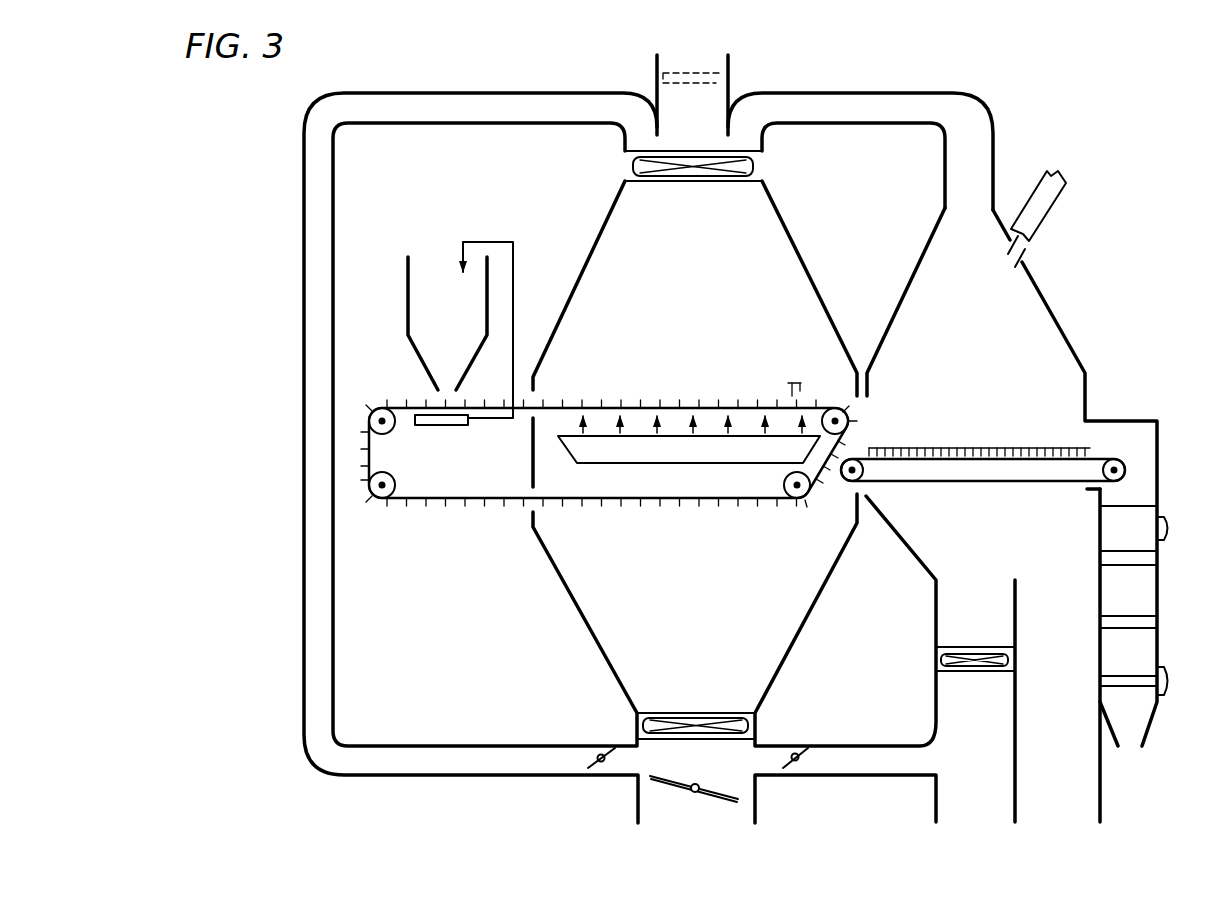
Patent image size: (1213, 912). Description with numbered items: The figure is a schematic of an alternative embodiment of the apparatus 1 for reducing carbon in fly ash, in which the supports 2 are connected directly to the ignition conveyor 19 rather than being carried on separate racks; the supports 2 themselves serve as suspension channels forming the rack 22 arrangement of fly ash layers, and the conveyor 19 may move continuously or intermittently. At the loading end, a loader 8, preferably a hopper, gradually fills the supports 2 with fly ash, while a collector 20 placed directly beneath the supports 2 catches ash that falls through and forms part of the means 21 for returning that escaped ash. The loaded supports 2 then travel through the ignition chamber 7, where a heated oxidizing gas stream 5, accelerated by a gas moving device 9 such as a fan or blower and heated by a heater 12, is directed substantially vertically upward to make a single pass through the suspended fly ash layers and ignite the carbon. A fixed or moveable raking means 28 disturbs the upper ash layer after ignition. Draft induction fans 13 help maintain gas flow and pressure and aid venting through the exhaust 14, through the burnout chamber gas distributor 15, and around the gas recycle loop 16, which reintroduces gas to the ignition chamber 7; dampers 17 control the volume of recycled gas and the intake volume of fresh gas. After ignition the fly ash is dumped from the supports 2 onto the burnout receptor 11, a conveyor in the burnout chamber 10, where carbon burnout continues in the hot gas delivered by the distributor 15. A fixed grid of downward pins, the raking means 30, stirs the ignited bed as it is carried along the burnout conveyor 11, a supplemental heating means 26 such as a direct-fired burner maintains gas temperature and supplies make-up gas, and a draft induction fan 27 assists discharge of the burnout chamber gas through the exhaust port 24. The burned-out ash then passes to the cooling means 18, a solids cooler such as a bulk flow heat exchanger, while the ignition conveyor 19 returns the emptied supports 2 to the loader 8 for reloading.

The apparatus 1 is at (243, 578).
The supports 2 is at (574, 405).
The gas stream 5 is at (700, 422).
The ignition chamber 7 is at (805, 226).
The loader 8 is at (407, 282).
The gas moving device 9 is at (735, 726).
The burnout chamber 10 is at (1094, 303).
The burnout receptor 11 is at (975, 484).
The heater 12 is at (667, 458).
The fans 13 is at (636, 168).
The exhaust 14 is at (715, 80).
The burnout chamber gas distributor 15 is at (975, 160).
The gas recycle loop 16 is at (313, 282).
The damper 17 is at (604, 762).
The means for cooling 18 is at (1133, 599).
The ignition conveyor 19 is at (443, 502).
The collector 20 is at (445, 427).
The means for returning ash 21 is at (515, 267).
The rack 22 is at (612, 391).
The exhaust port 24 is at (1020, 796).
The means for supplemental heating 26 is at (1040, 212).
The draft induction fan 27 is at (939, 659).
The means for raking 28 is at (788, 383).
The means for raking or stirring 30 is at (991, 444).